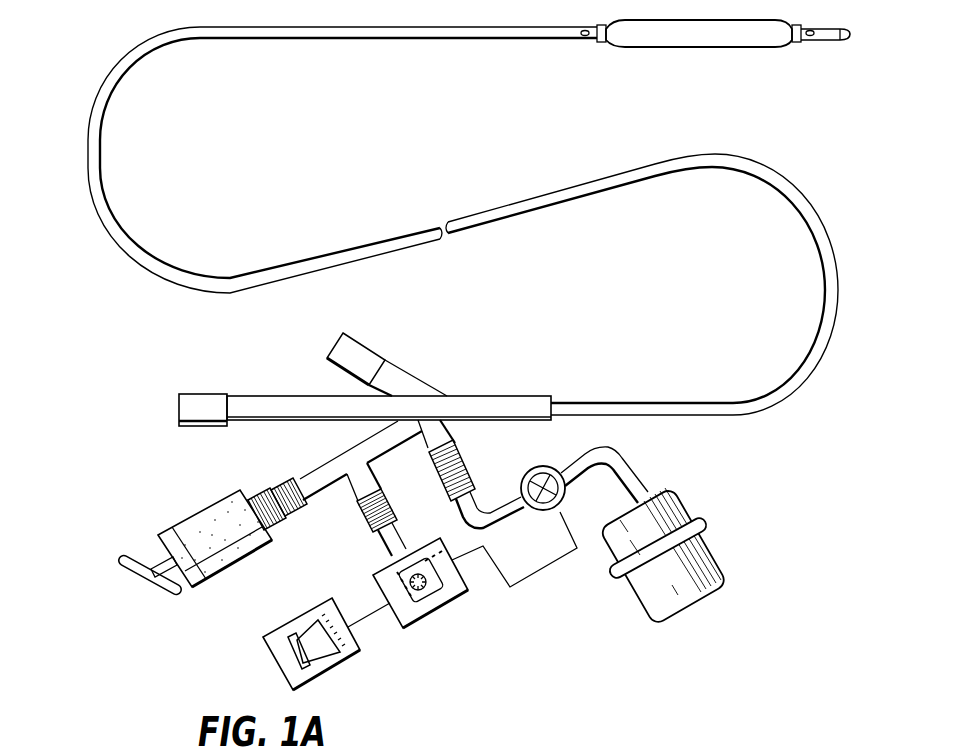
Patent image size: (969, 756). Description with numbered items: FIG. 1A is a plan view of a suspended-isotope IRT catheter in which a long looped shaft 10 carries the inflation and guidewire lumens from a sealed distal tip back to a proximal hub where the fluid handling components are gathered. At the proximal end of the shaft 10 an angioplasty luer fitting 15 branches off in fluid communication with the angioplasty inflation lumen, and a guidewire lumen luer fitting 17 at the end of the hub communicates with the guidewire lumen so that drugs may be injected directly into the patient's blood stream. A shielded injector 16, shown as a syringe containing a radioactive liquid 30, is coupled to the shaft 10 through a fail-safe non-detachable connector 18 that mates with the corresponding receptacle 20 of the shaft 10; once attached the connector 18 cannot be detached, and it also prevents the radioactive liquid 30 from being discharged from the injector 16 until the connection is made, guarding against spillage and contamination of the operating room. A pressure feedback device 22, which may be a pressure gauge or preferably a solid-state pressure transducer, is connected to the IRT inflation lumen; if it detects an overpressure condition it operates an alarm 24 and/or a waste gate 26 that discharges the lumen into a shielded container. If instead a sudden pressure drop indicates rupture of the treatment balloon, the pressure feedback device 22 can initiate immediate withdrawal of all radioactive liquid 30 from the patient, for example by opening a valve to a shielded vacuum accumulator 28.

The shaft 10 is at (525, 207).
The angioplasty luer fitting 15 is at (336, 353).
The shielded injector 16 is at (186, 526).
The guidewire lumen luer fitting 17 is at (178, 408).
The fail-safe non-detachable connector 18 is at (261, 498).
The receptacle 20 is at (280, 488).
The pressure feedback device 22 is at (445, 600).
The alarm 24 is at (355, 653).
The waste gate 26 is at (529, 472).
The shielded vacuum accumulator 28 is at (704, 603).
The radioactive liquid 30 is at (233, 542).